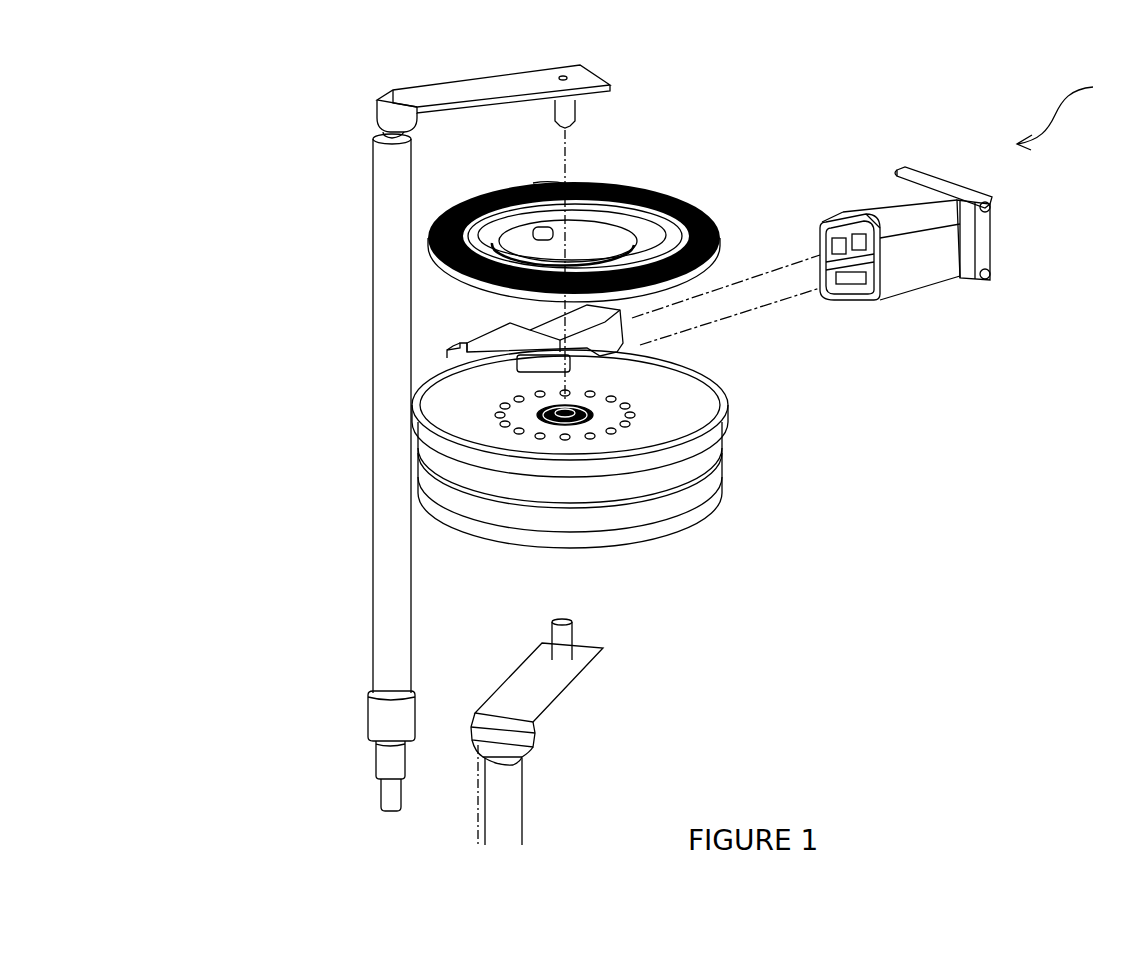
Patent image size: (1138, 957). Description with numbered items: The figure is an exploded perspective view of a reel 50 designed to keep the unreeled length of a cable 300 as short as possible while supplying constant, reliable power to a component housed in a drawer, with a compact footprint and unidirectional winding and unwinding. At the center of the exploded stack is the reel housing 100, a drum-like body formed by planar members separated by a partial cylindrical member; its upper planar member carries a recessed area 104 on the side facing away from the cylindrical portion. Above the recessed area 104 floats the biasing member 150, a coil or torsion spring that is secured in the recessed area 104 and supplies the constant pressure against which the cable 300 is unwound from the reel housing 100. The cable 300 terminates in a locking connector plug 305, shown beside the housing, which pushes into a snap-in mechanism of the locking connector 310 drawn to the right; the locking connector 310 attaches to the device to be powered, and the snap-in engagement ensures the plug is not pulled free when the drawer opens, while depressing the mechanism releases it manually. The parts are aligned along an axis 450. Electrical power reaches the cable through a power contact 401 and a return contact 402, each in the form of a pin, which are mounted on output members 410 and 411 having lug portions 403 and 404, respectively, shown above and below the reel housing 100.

The reel 50 is at (1073, 115).
The reel housing 100 is at (697, 372).
The recessed area 104 is at (660, 407).
The biasing member 150 is at (663, 193).
The cable 300 is at (722, 450).
The locking connector plug 305 is at (628, 317).
The locking connector 310 is at (987, 233).
The power contact 401 is at (573, 111).
The return contact 402 is at (573, 632).
The lug portion 403 is at (445, 87).
The lug portion 404 is at (550, 688).
The output member 410 is at (390, 190).
The output member 411 is at (525, 807).
The axis 450 is at (587, 305).